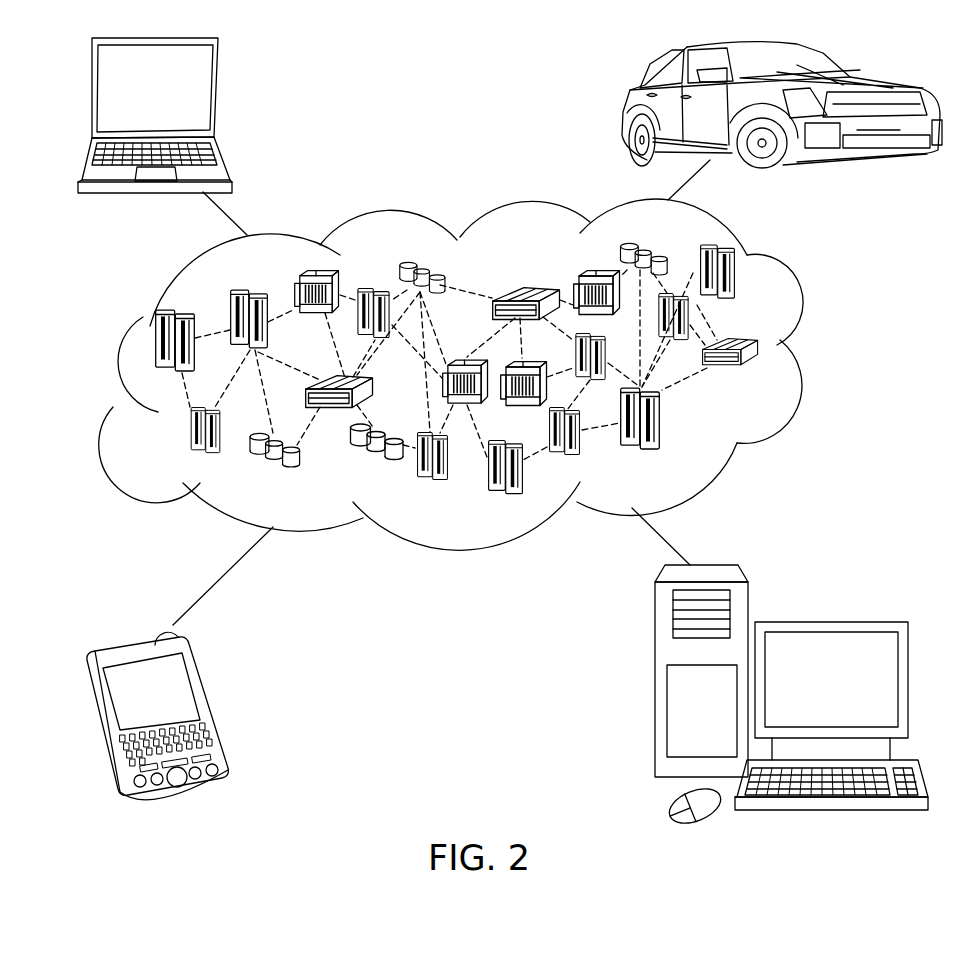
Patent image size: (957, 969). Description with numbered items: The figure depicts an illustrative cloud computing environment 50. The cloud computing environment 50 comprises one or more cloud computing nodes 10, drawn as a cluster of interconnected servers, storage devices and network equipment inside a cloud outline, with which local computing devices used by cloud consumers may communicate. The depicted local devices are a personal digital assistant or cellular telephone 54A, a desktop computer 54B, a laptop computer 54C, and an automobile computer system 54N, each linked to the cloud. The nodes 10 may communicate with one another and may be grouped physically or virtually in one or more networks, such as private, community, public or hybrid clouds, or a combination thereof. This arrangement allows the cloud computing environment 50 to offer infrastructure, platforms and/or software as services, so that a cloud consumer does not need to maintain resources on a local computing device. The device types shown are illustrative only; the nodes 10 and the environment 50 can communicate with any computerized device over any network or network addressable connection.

The cloud computing node 10 is at (778, 381).
The cloud computing environment 50 is at (836, 346).
The personal digital assistant or cellular telephone 54A is at (213, 705).
The desktop computer 54B is at (830, 622).
The laptop computer 54C is at (218, 92).
The automobile computer system 54N is at (623, 110).